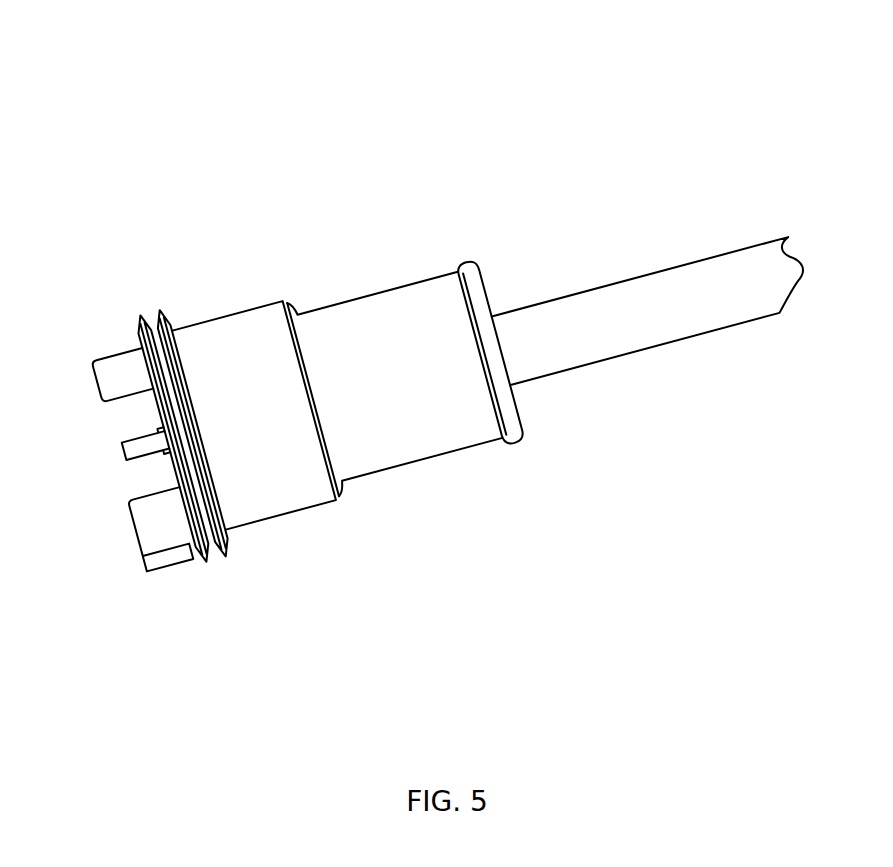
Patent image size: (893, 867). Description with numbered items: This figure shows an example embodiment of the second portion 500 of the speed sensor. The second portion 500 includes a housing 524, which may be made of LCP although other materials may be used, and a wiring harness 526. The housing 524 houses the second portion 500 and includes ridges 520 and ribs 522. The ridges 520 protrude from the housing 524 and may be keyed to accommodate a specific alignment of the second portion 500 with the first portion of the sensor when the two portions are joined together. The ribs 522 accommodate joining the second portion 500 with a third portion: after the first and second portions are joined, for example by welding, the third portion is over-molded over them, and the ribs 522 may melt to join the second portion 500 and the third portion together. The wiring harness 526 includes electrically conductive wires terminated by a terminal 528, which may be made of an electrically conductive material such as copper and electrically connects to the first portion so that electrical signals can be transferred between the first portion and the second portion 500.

The second portion 500 is at (146, 36).
The ridges 520 is at (122, 375).
The ribs 522 is at (162, 316).
The housing 524 is at (366, 327).
The wiring harness 526 is at (676, 290).
The terminal 528 is at (118, 462).